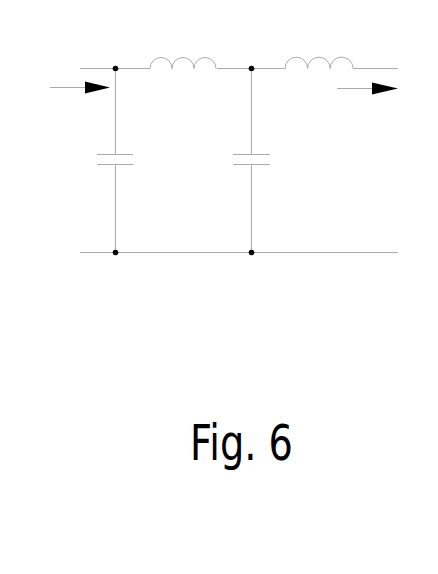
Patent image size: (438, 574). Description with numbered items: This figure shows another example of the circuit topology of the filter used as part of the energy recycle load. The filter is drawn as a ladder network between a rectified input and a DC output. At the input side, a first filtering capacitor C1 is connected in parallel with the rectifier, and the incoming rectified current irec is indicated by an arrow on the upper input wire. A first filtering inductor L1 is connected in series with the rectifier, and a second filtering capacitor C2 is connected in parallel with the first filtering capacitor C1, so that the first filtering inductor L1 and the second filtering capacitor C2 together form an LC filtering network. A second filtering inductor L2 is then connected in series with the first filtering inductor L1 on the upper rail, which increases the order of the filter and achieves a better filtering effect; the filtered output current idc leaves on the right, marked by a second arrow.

The first filtering inductor L1 is at (183, 50).
The second filtering inductor L2 is at (319, 50).
The first filtering capacitor C1 is at (130, 163).
The second filtering capacitor C2 is at (236, 163).
The rectified current i_rec irec is at (80, 110).
The DC output current i_dc idc is at (367, 111).